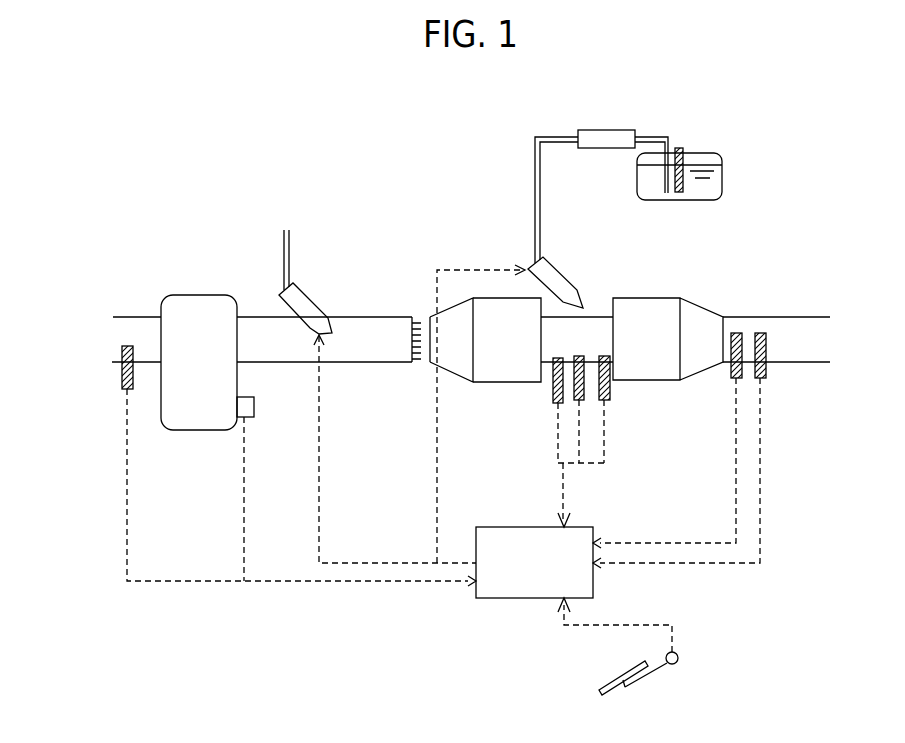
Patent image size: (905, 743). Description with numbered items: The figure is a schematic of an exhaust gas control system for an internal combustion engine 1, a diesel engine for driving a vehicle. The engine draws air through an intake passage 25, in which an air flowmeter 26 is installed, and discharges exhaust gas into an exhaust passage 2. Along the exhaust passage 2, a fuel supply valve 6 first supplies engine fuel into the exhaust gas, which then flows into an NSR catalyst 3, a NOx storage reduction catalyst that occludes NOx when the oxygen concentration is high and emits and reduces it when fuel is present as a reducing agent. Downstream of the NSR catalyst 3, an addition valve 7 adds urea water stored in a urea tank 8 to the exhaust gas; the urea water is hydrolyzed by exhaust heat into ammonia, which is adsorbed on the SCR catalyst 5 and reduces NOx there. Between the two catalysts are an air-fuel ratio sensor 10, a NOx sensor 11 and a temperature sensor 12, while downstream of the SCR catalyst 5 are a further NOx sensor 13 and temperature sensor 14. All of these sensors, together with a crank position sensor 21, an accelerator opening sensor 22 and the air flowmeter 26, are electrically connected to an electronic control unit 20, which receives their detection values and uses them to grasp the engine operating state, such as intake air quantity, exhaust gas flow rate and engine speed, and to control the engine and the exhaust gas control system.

The internal combustion engine 1 is at (200, 295).
The exhaust passage 2 is at (397, 313).
The NSR catalyst 3 is at (498, 383).
The SCR catalyst 5 is at (664, 310).
The fuel supply valve 6 is at (313, 303).
The addition valve 7 is at (562, 276).
The urea tank 8 is at (722, 172).
The air-fuel ratio sensor 10 is at (553, 396).
The NOx sensor 11 is at (584, 403).
The temperature sensor 12 is at (606, 403).
The NOx sensor 13 is at (760, 331).
The temperature sensor 14 is at (733, 381).
The electronic control unit 20 is at (494, 527).
The crank position sensor 21 is at (254, 405).
The accelerator opening sensor 22 is at (675, 666).
The intake passage 25 is at (126, 317).
The air flowmeter 26 is at (127, 392).